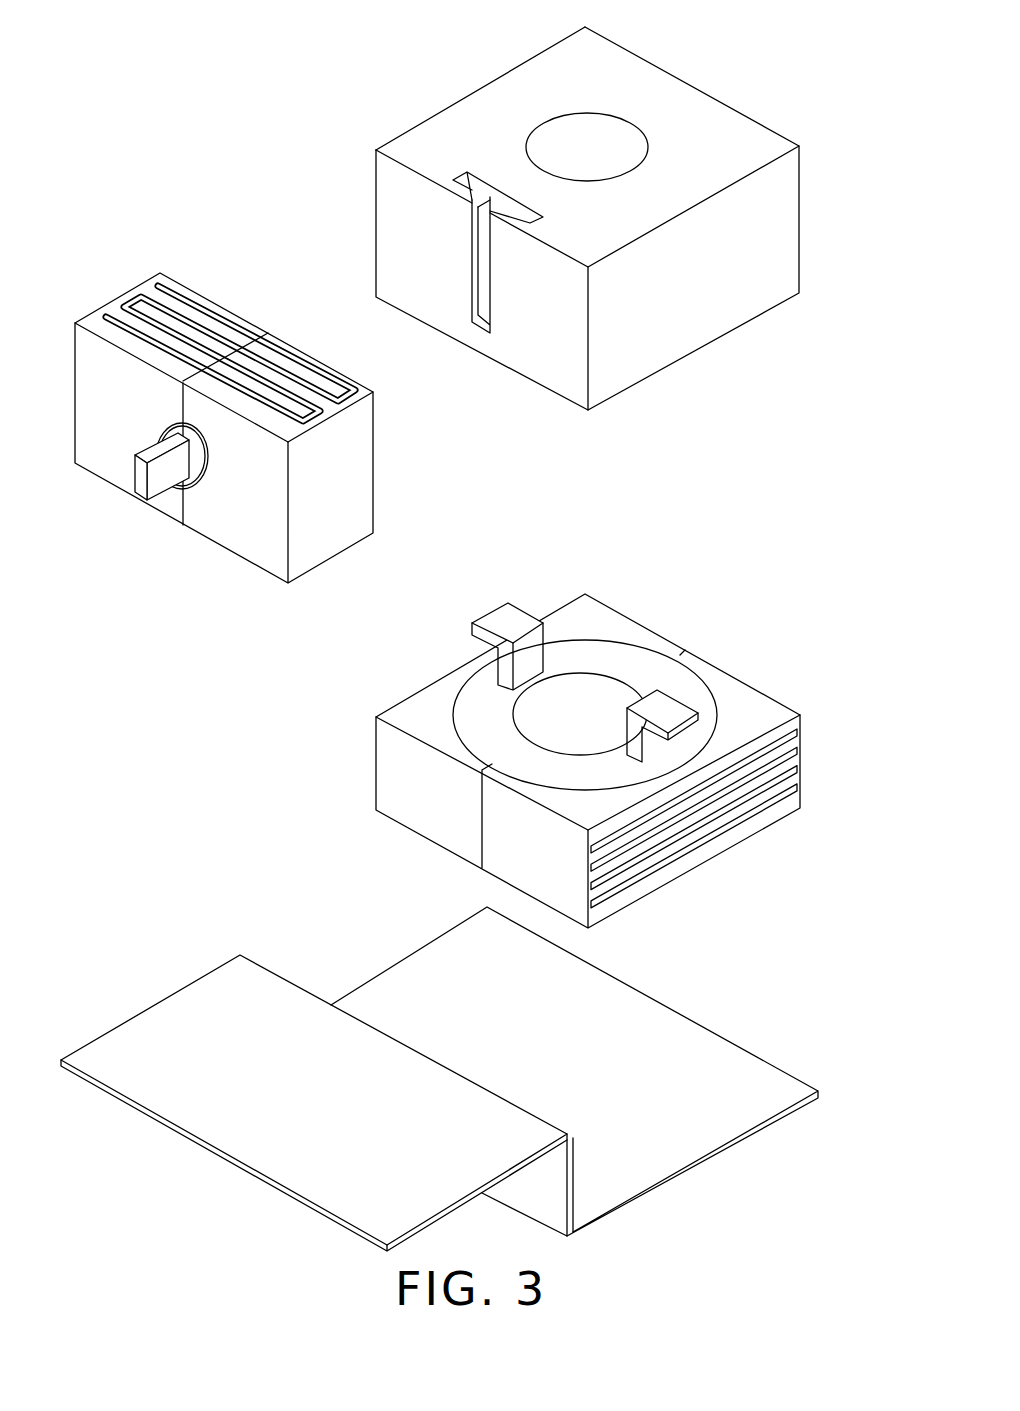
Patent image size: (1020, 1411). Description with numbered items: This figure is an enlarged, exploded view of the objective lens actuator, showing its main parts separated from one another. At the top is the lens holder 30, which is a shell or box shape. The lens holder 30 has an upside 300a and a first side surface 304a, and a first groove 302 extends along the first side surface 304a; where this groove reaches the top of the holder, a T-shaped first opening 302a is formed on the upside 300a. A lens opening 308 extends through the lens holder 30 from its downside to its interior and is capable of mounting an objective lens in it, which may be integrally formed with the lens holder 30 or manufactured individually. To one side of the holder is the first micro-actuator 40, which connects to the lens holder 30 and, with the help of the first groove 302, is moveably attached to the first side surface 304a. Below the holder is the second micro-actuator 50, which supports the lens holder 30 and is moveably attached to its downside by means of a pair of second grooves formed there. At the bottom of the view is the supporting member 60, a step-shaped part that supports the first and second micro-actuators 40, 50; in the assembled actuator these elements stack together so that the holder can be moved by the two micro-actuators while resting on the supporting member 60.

The lens holder 30 is at (586, 236).
The upside 300a is at (748, 145).
The first groove 302 is at (478, 260).
The T-shaped first opening 302a is at (477, 187).
The first side surface 304a is at (538, 342).
The lens opening 308 is at (565, 138).
The first micro-actuator 40 is at (135, 272).
The second micro-actuator 50 is at (386, 696).
The supporting member 60 is at (208, 1020).